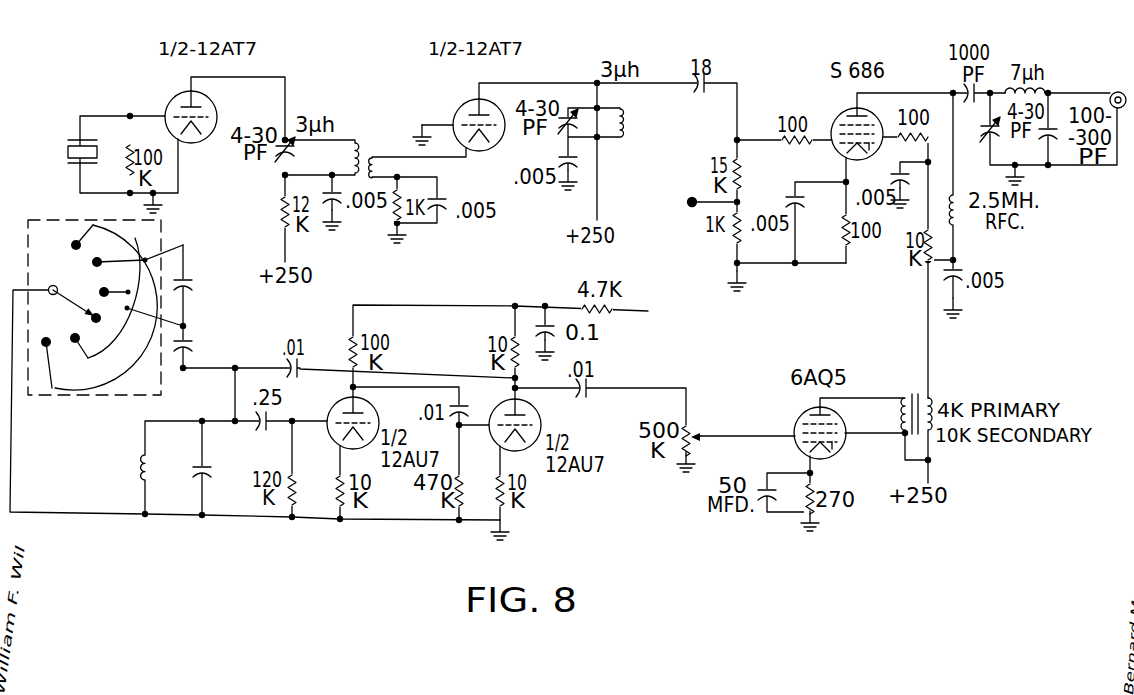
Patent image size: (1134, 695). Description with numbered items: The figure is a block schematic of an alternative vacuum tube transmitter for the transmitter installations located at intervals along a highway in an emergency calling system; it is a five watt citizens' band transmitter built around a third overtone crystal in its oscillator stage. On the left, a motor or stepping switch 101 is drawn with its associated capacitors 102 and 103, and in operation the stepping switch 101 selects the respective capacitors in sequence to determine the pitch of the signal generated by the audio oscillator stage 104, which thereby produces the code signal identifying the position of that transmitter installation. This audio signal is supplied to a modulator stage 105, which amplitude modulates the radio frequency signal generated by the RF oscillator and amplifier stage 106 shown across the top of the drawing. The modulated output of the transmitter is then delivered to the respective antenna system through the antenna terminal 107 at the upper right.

The stepping switch 101 is at (170, 240).
The capacitor 102 is at (190, 351).
The capacitor 103 is at (190, 280).
The audio oscillator stage 104 is at (376, 402).
The modulator stage 105 is at (803, 413).
The RF oscillator and amplifier stage 106 is at (172, 99).
The antenna terminal 107 is at (1112, 93).